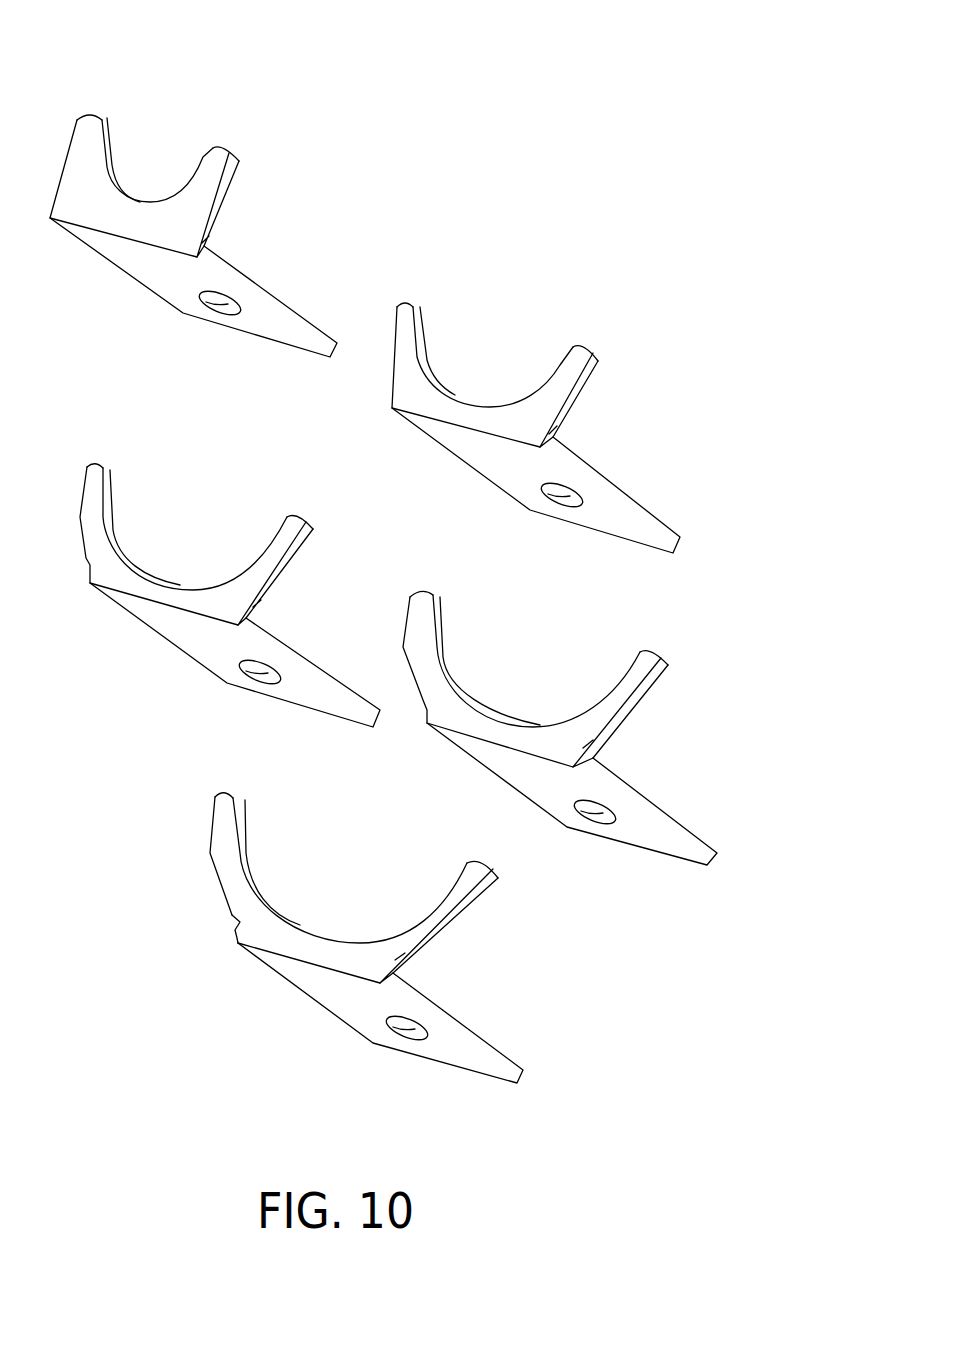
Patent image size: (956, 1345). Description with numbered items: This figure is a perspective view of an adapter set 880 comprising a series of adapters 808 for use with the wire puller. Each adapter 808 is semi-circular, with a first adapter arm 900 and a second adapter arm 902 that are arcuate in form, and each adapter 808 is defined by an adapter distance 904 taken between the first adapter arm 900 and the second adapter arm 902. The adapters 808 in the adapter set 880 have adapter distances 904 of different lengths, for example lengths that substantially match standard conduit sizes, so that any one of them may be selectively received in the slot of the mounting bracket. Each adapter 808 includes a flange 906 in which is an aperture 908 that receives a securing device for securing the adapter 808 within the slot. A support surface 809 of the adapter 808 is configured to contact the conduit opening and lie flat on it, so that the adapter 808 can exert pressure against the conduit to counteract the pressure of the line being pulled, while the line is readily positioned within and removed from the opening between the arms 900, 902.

The adapter set 880 is at (582, 131).
The adapter 808 is at (283, 205).
The first adapter arm 900 is at (213, 793).
The second adapter arm 902 is at (495, 872).
The adapter distance 904 is at (467, 867).
The support surface 809 is at (263, 929).
The flange 906 is at (448, 1043).
The aperture 908 is at (400, 1023).